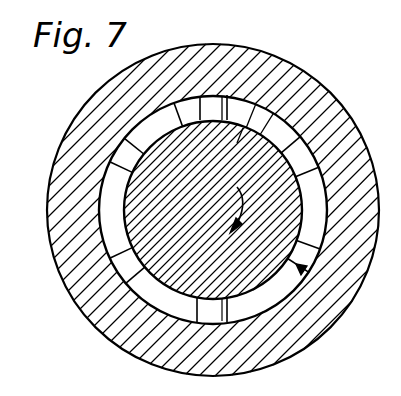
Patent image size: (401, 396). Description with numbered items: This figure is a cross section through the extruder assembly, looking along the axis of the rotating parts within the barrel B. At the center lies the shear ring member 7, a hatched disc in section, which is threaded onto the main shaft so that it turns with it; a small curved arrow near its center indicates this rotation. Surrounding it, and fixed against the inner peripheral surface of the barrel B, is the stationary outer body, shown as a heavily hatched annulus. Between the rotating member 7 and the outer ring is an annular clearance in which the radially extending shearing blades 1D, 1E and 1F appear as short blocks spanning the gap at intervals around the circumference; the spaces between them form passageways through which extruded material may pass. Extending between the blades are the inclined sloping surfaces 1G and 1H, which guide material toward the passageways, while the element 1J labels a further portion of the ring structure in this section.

The barrel B is at (322, 86).
The sloping surface 1H is at (306, 78).
The bearing liner ring 1J is at (345, 250).
The shear ring member 7 is at (268, 112).
The sloping surface 1G is at (173, 96).
The shearing blade 1D is at (210, 104).
The shearing blade 1E is at (294, 157).
The shearing blade 1F is at (300, 262).